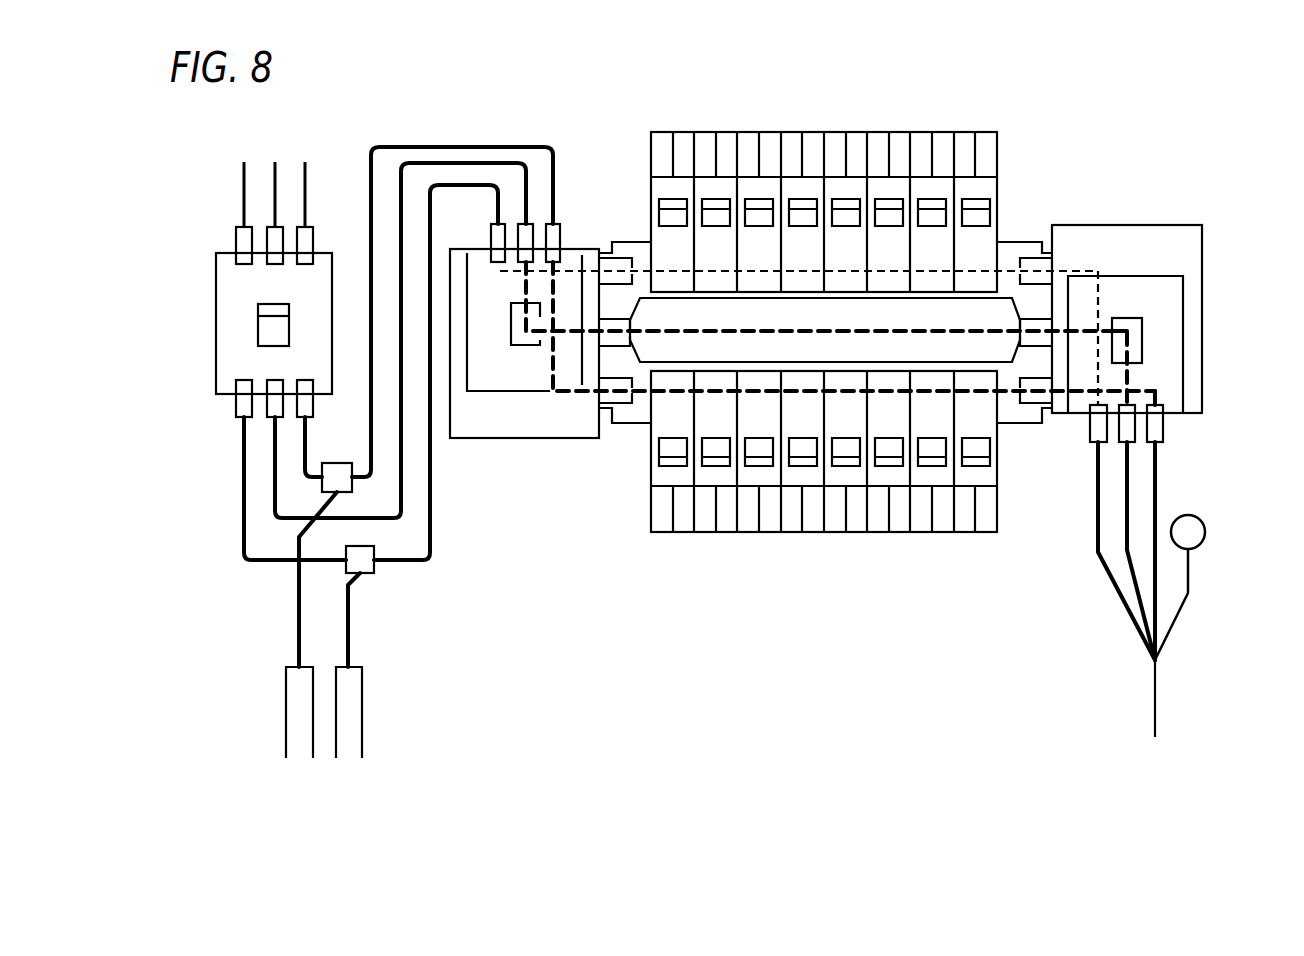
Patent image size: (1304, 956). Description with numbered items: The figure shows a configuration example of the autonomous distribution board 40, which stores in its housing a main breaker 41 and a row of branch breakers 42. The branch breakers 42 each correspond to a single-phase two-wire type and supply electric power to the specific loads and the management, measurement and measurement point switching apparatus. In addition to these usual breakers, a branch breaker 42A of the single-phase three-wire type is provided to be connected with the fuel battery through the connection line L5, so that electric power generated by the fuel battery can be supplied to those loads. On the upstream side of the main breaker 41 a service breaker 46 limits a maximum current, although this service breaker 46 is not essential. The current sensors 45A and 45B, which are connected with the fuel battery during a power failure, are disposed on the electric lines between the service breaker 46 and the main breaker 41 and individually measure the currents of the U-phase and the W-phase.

The autonomous distribution board 40 is at (1035, 133).
The main breaker 41 is at (476, 429).
The branch breaker 42 is at (767, 183).
The branch breaker 42A is at (1200, 257).
The current sensor 45A is at (328, 465).
The current sensor 45B is at (365, 573).
The service breaker 46 is at (222, 364).
The connection line L5 is at (1157, 700).